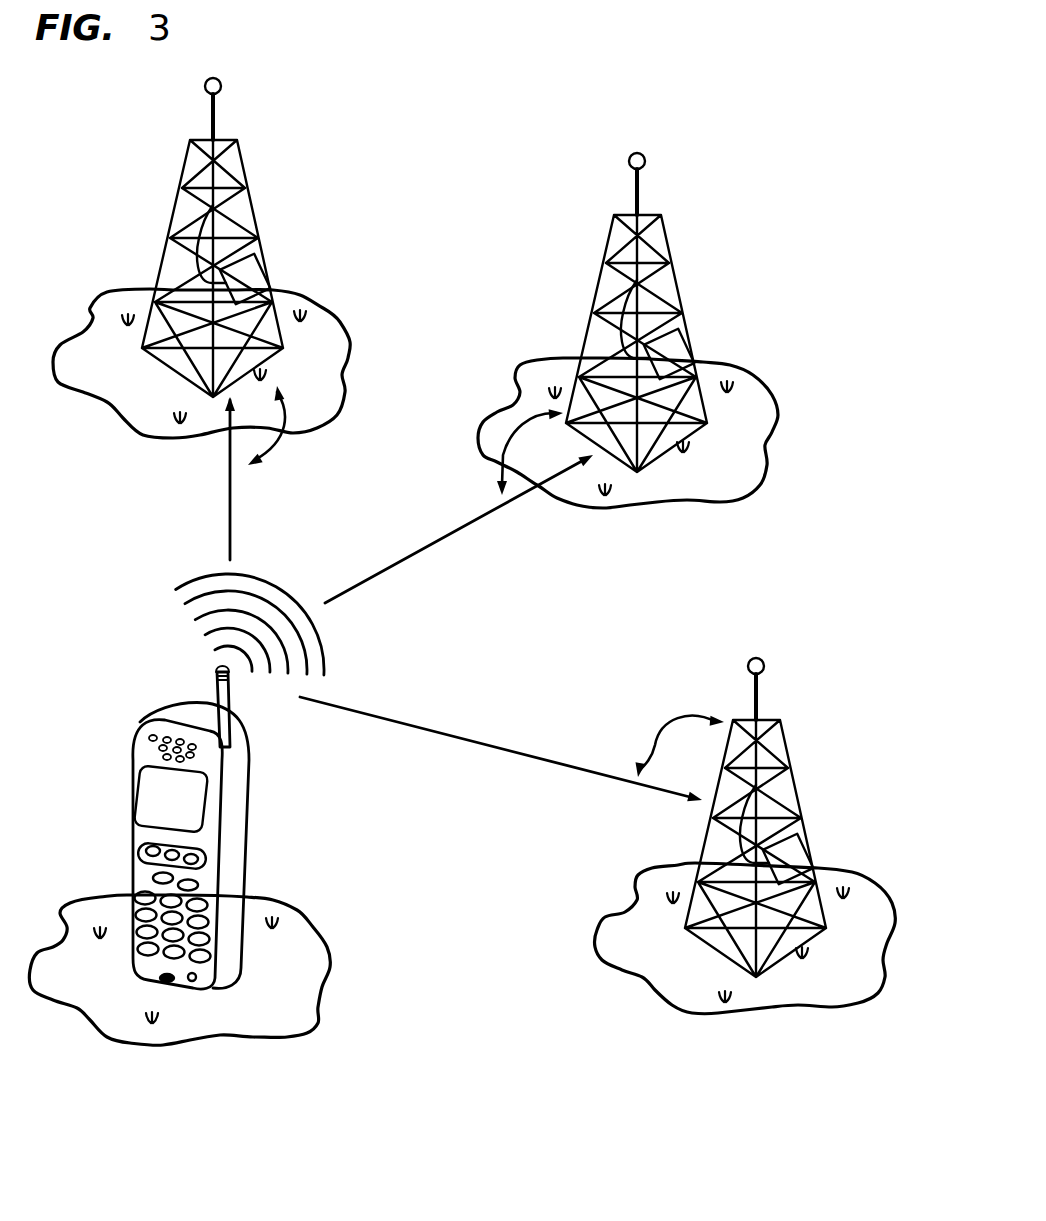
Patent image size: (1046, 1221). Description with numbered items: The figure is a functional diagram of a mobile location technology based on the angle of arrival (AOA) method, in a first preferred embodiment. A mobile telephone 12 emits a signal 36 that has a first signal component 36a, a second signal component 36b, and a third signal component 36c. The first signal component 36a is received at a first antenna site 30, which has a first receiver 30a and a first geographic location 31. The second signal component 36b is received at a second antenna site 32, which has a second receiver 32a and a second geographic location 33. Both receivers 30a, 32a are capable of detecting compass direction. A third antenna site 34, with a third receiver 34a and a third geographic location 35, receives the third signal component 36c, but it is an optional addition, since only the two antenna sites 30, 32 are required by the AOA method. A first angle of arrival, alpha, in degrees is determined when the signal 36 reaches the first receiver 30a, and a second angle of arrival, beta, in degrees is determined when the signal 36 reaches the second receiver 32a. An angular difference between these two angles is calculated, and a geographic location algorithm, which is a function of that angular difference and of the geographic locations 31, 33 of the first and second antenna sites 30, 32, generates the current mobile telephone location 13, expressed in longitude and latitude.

The mobile telephone 12 is at (242, 807).
The current mobile telephone location 13 is at (317, 909).
The first antenna site 30 is at (257, 164).
The first receiver 30a is at (258, 273).
The first geographic location 31 is at (112, 300).
The second antenna site 32 is at (682, 237).
The second receiver 32a is at (685, 347).
The second geographic location 33 is at (537, 373).
The third antenna site 34 is at (800, 744).
The third receiver 34a is at (802, 852).
The third geographic location 35 is at (655, 880).
The signal 36 is at (263, 597).
The first signal component 36a is at (228, 503).
The second signal component 36b is at (452, 537).
The third signal component 36c is at (488, 748).